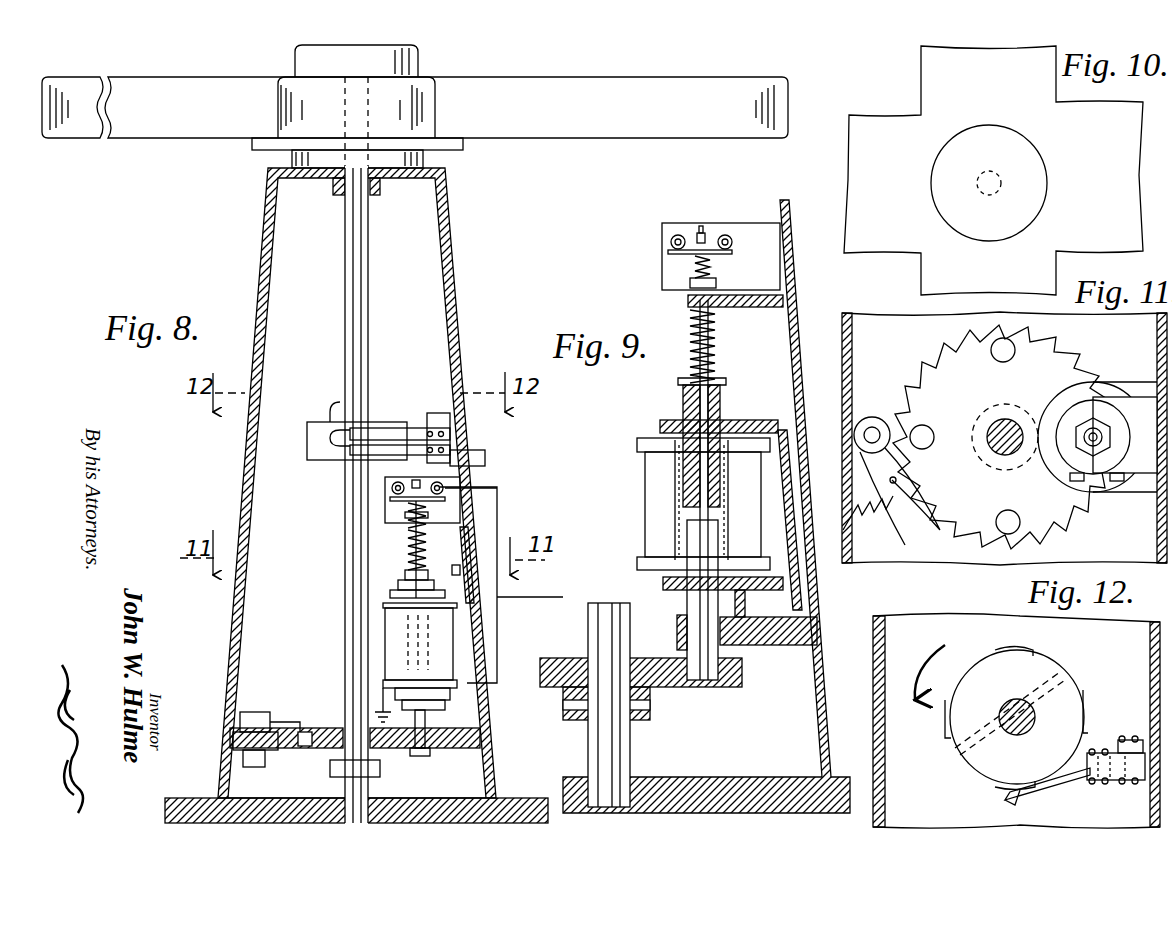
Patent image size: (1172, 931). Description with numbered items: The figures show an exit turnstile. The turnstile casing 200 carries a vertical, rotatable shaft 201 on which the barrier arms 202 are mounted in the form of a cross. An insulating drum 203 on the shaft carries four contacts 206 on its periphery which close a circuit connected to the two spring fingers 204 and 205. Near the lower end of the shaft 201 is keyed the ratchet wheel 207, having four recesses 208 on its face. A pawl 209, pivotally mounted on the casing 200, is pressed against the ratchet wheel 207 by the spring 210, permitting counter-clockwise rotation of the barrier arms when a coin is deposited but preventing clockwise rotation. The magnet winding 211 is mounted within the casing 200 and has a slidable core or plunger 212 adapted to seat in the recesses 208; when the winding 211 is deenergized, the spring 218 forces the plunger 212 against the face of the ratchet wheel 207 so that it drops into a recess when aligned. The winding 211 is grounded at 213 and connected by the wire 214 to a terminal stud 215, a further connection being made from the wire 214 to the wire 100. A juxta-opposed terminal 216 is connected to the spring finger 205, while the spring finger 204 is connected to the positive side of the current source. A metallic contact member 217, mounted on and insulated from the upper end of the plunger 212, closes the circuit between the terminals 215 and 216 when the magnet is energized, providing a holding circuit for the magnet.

In FIG. 8, the wire 100 is at (546, 600).
In FIG. 8, the turnstile casing 200 is at (460, 330).
In FIG. 9, the turnstile casing 200 is at (789, 275).
In FIG. 11, the turnstile casing 200 is at (850, 333).
In FIG. 12, the turnstile casing 200 is at (888, 748).
In FIG. 8, the vertical rotatable shaft 201 is at (345, 318).
In FIG. 9, the vertical rotatable shaft 201 is at (632, 742).
In FIG. 10, the vertical rotatable shaft 201 is at (996, 178).
In FIG. 11, the vertical rotatable shaft 201 is at (1006, 420).
In FIG. 12, the vertical rotatable shaft 201 is at (1020, 736).
In FIG. 8, the barrier arms 202 is at (608, 138).
In FIG. 10, the barrier arms 202 is at (993, 170).
In FIG. 8, the insulating drum 203 is at (320, 460).
In FIG. 12, the insulating drum 203 is at (1017, 717).
In FIG. 8, the spring finger 204 is at (421, 413).
In FIG. 12, the spring finger 204 is at (1084, 792).
In FIG. 8, the spring finger 205 is at (386, 428).
In FIG. 8, the contacts 206 is at (332, 422).
In FIG. 12, the contacts 206 is at (1088, 690).
In FIG. 8, the ratchet wheel 207 is at (395, 752).
In FIG. 9, the ratchet wheel 207 is at (682, 690).
In FIG. 11, the ratchet wheel 207 is at (1070, 363).
In FIG. 8, the recesses 208 is at (326, 720).
In FIG. 11, the recesses 208 is at (930, 425).
In FIG. 8, the pawl 209 is at (271, 770).
In FIG. 11, the pawl 209 is at (912, 526).
In FIG. 11, the spring 210 is at (871, 527).
In FIG. 8, the magnet winding 211 is at (383, 640).
In FIG. 9, the magnet winding 211 is at (640, 548).
In FIG. 11, the magnet winding 211 is at (1092, 506).
In FIG. 8, the slidable core / plunger 212 is at (427, 745).
In FIG. 9, the slidable core / plunger 212 is at (688, 606).
In FIG. 8, the ground 213 is at (395, 690).
In FIG. 8, the wire 214 is at (497, 520).
In FIG. 8, the terminal stud 215 is at (497, 488).
In FIG. 8, the juxta-opposed terminal 216 is at (393, 490).
In FIG. 9, the juxta-opposed terminal 216 is at (678, 235).
In FIG. 8, the metallic contact member 217 is at (395, 503).
In FIG. 9, the metallic contact member 217 is at (728, 235).
In FIG. 8, the spring 218 is at (409, 564).
In FIG. 9, the spring 218 is at (714, 352).